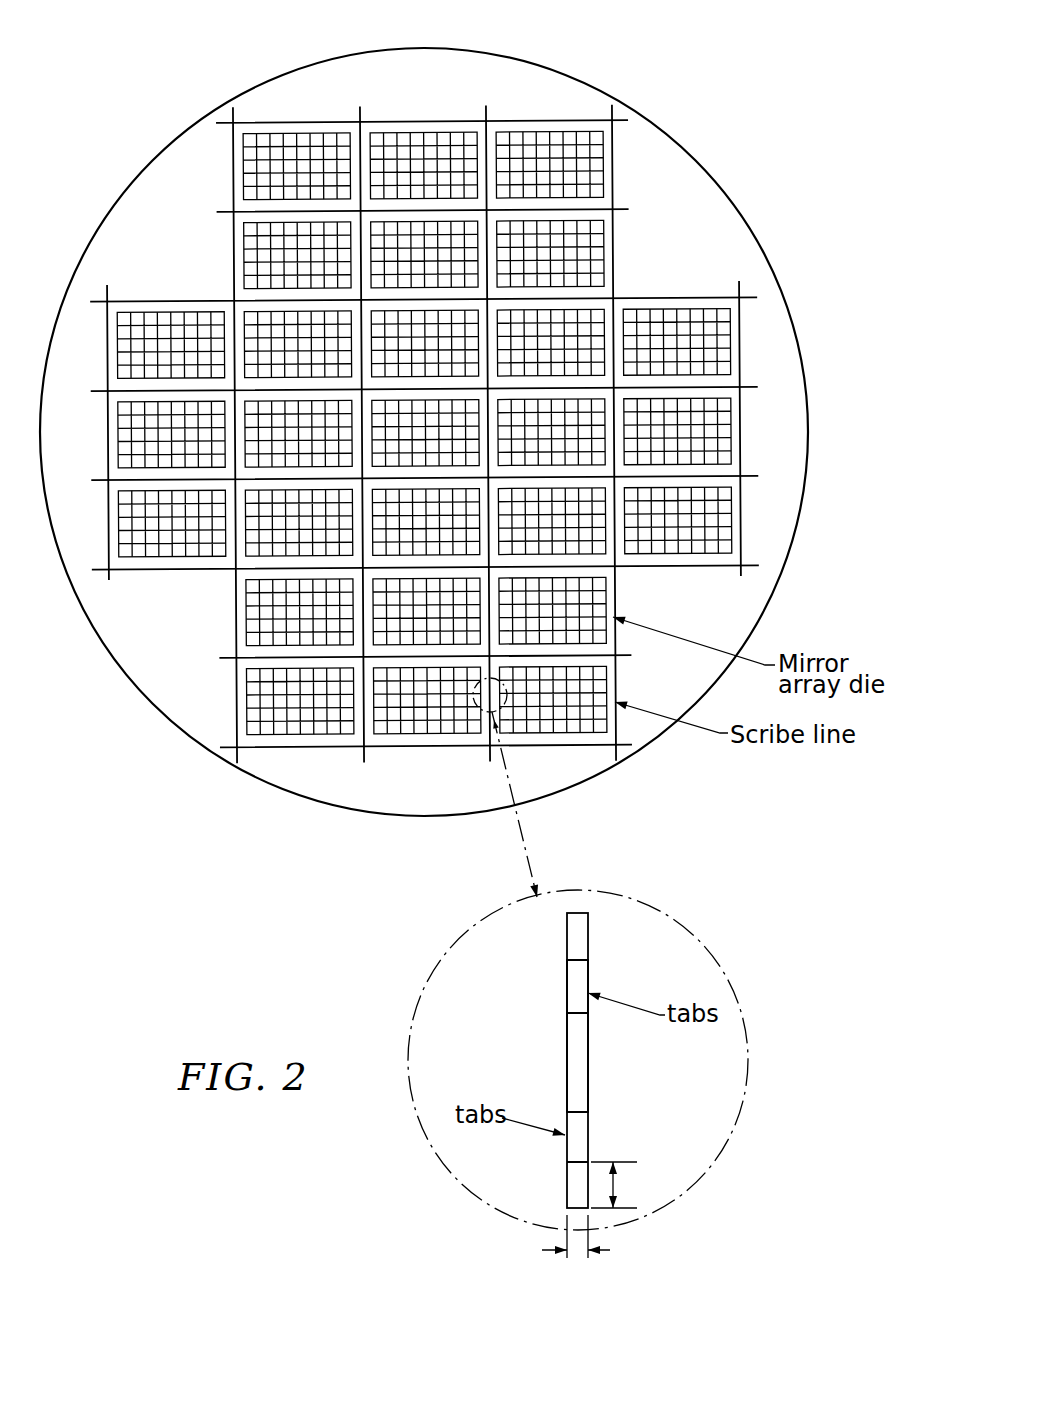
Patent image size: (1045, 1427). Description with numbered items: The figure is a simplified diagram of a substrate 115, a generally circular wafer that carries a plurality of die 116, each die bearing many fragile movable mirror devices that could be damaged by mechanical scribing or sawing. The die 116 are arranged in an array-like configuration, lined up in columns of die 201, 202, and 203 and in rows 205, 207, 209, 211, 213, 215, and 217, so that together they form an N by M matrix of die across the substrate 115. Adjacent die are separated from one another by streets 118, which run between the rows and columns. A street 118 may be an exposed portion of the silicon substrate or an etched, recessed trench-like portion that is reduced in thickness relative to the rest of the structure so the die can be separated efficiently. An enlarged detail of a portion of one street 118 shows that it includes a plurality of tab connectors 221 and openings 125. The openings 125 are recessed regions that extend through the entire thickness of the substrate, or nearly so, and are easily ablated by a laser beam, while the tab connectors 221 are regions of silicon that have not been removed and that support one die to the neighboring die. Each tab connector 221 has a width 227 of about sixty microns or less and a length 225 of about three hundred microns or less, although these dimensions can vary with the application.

The substrate 115 is at (154, 667).
The die 116 is at (735, 328).
The street 118 is at (575, 923).
The opening 125 is at (573, 987).
The column of die 201 is at (555, 122).
The column of die 202 is at (435, 128).
The column of die 203 is at (297, 127).
The row of die 205 is at (489, 107).
The row of die 207 is at (623, 250).
The row of die 209 is at (497, 338).
The row of die 211 is at (747, 427).
The row of die 213 is at (747, 515).
The row of die 215 is at (622, 602).
The row of die 217 is at (618, 688).
The tab connector 221 is at (575, 1065).
The length of tab connector 225 is at (622, 1185).
The width of tab connector 227 is at (577, 1253).